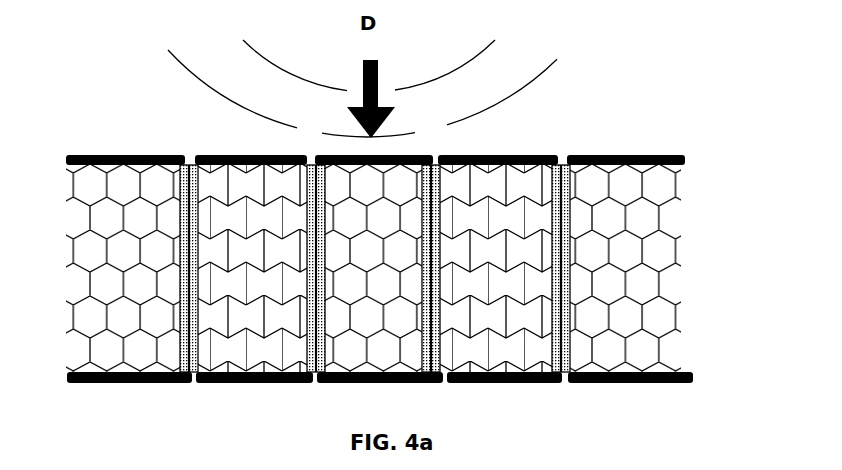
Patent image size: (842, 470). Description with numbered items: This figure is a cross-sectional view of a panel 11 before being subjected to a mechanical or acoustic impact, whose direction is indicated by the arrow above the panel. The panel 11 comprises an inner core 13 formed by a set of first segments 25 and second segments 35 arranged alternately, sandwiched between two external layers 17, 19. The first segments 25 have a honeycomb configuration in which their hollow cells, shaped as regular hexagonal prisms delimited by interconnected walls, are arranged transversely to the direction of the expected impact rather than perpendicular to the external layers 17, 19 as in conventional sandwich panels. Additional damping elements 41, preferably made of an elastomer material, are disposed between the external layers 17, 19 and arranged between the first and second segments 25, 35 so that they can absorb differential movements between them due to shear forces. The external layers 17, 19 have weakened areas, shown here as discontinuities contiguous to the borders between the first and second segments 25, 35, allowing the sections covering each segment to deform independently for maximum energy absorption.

The panel 11 is at (102, 122).
The inner core 13 is at (650, 254).
The external layer 17 is at (685, 161).
The external layer 19 is at (693, 375).
The first segment 25 is at (142, 357).
The second segment 35 is at (268, 360).
The additional damping element 41 is at (195, 155).